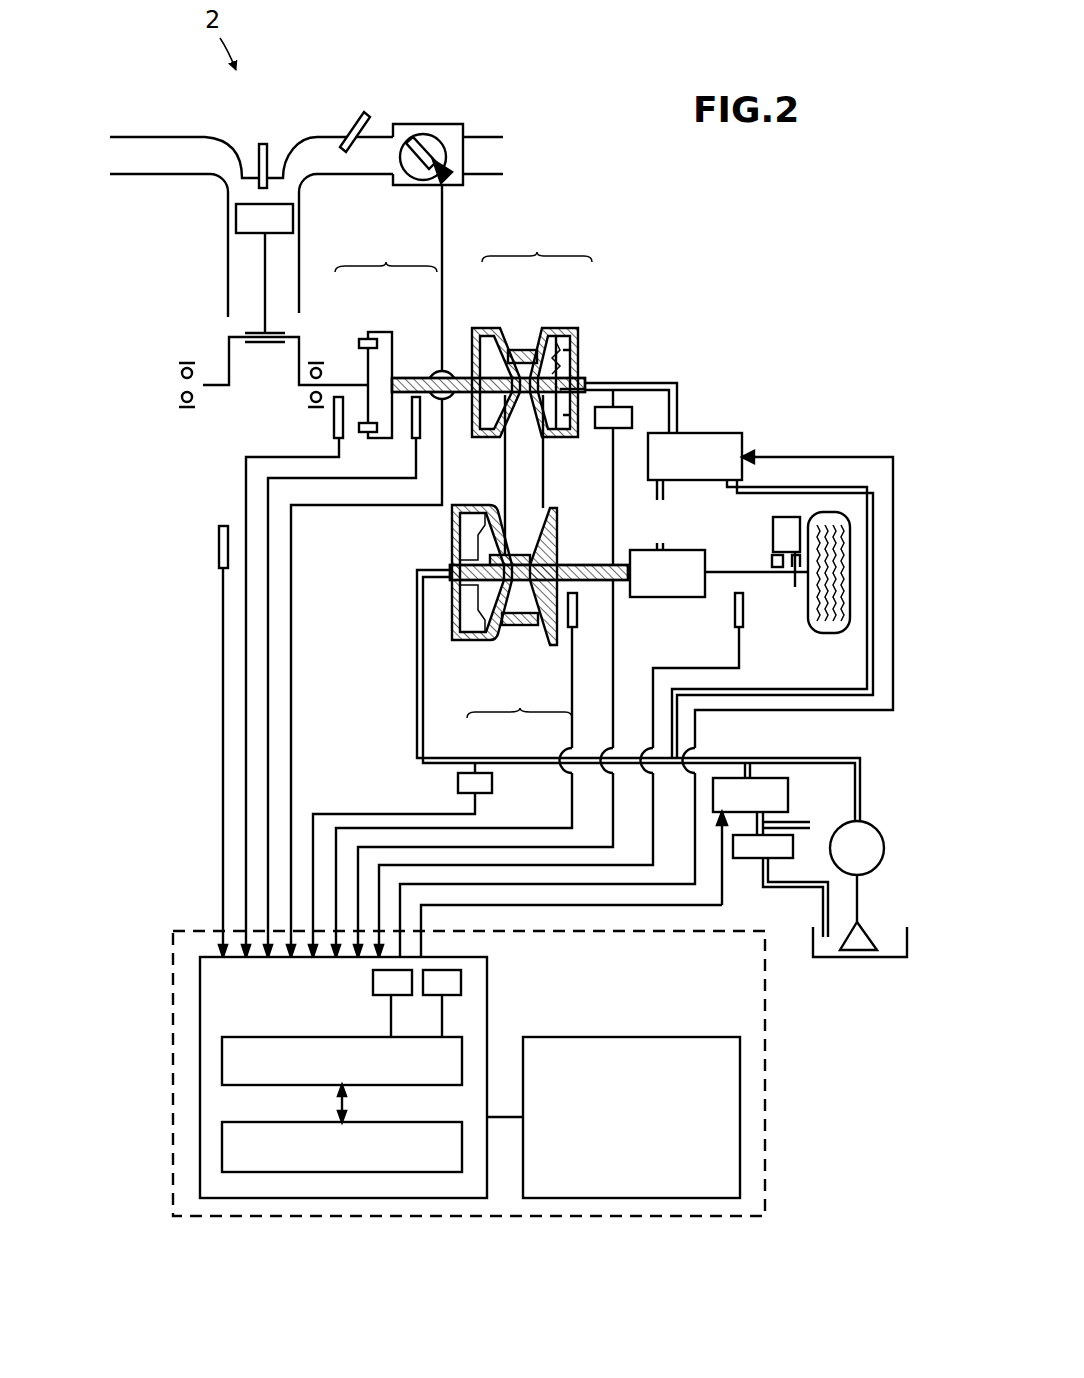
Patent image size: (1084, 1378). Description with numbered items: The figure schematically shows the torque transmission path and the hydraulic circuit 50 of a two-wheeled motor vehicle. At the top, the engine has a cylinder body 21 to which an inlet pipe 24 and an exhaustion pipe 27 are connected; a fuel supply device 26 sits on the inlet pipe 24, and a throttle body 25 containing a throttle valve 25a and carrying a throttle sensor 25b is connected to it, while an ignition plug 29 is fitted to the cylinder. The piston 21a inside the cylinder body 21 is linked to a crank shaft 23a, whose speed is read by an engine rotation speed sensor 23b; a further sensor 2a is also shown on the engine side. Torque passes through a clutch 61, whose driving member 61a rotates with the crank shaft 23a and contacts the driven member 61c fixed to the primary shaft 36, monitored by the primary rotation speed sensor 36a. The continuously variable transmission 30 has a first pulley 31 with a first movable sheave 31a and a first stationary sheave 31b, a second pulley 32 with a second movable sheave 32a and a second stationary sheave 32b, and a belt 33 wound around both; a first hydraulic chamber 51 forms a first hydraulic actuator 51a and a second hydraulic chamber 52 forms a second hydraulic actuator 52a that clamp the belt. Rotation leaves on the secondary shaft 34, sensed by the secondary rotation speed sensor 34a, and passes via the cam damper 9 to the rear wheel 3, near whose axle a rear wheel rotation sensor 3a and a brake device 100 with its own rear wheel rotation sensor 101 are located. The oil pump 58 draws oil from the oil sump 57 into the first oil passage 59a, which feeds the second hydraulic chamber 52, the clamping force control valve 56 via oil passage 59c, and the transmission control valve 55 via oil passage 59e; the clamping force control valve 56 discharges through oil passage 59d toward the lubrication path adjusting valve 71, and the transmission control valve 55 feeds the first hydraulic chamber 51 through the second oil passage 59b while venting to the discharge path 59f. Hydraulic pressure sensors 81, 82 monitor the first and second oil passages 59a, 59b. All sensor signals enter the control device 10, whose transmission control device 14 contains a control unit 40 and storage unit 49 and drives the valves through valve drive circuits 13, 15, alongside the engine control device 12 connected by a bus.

The sensor 2a is at (219, 545).
The rear wheel 3 is at (830, 634).
The rear wheel rotation sensor 3a is at (745, 607).
The cam damper 9 is at (683, 598).
The control device 10 is at (765, 1095).
The engine control device 12 is at (680, 1037).
The valve drive circuit 13 is at (400, 995).
The transmission control device 14 is at (200, 985).
The valve drive circuit 15 is at (452, 995).
The cylinder body 21 is at (300, 255).
The piston 21a is at (293, 218).
The crank shaft 23a is at (203, 380).
The engine rotation speed sensor 23b is at (334, 418).
The inlet pipe 24 is at (372, 137).
The throttle body 25 is at (425, 124).
The throttle valve 25a is at (446, 165).
The throttle sensor 25b is at (445, 140).
The fuel supply device 26 is at (355, 118).
The exhaustion pipe 27 is at (168, 136).
The ignition plug 29 is at (264, 144).
The continuously variable transmission 30 is at (594, 328).
The first pulley 31 is at (537, 239).
The first movable sheave 31a is at (562, 328).
The first stationary sheave 31b is at (488, 328).
The second pulley 32 is at (519, 731).
The second movable sheave 32a is at (476, 641).
The second stationary sheave 32b is at (548, 646).
The belt 33 is at (545, 467).
The secondary shaft 34 is at (568, 563).
The secondary rotation speed sensor 34a is at (578, 607).
The primary shaft 36 is at (448, 345).
The primary rotation speed sensor 36a is at (416, 440).
The control unit 40 is at (222, 1060).
The storage unit 49 is at (222, 1147).
The hydraulic circuit 50 is at (400, 656).
The first hydraulic chamber 51 is at (552, 361).
The first hydraulic actuator 51a is at (614, 328).
The second hydraulic chamber 52 is at (452, 528).
The second hydraulic actuator 52a is at (432, 558).
The transmission control valve 55 is at (722, 433).
The clamping force control valve 56 is at (775, 776).
The oil sump 57 is at (860, 958).
The oil pump 58 is at (868, 822).
The first oil passage 59a is at (417, 675).
The second oil passage 59b is at (682, 393).
The oil passage 59c is at (745, 776).
The oil passage 59d is at (765, 818).
The oil passage 59e is at (835, 697).
The discharge path 59f is at (657, 500).
The clutch 61 is at (386, 335).
The driving member 61a is at (366, 337).
The driven member 61c is at (398, 338).
The lubrication path adjusting valve 71 is at (750, 860).
The hydraulic pressure sensor 81 is at (458, 783).
The hydraulic pressure sensor 82 is at (618, 405).
The brake device 100 is at (773, 525).
The rear wheel rotation sensor 101 is at (772, 565).